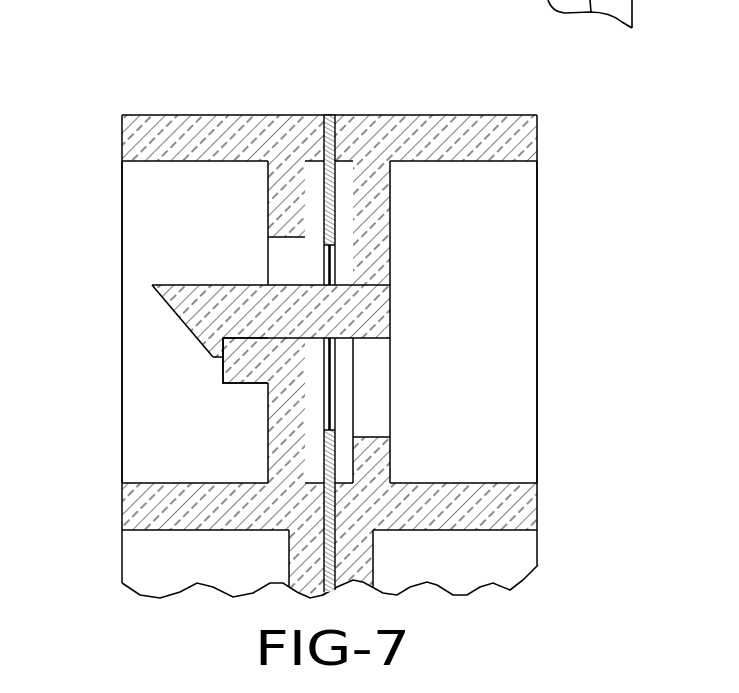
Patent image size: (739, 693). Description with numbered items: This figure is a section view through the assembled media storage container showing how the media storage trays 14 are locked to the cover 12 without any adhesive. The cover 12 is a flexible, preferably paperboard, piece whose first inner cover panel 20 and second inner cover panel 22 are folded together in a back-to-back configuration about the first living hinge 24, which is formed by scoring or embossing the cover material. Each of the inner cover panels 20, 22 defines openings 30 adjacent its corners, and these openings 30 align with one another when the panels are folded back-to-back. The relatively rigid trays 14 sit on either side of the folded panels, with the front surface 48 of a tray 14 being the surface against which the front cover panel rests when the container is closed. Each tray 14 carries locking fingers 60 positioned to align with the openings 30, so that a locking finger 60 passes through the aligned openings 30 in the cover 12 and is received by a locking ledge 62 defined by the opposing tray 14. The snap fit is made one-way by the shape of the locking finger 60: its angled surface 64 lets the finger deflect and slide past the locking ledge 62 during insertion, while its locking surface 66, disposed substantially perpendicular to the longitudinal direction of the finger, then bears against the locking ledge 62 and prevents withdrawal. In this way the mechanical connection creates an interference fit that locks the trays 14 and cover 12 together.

The cover 12 is at (349, 376).
The media storage tray 14 is at (202, 99).
The first inner cover panel 20 is at (322, 197).
The second inner cover panel 22 is at (333, 217).
The first living hinge 24 is at (325, 112).
The opening 30 is at (333, 265).
The front surface 48 is at (121, 137).
The locking finger 60 is at (200, 292).
The locking ledge 62 is at (223, 370).
The angled surface 64 is at (185, 317).
The locking surface 66 is at (237, 344).